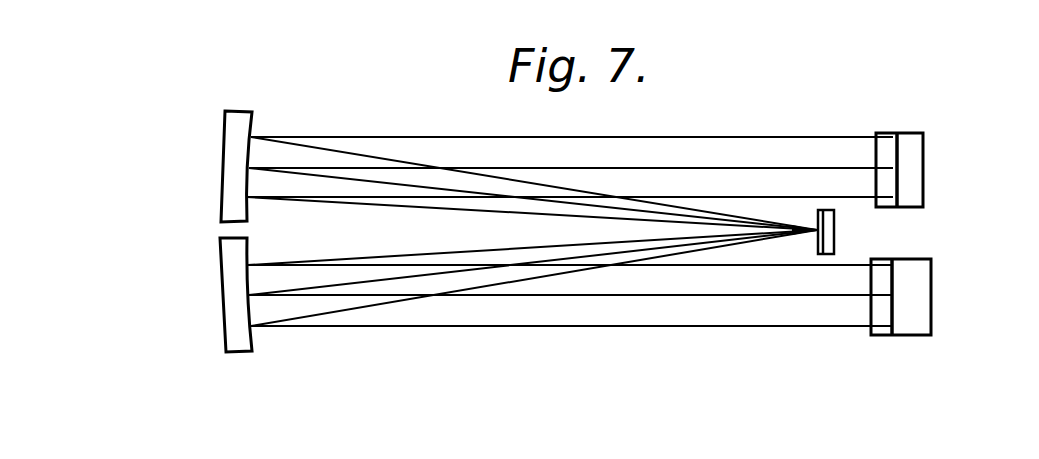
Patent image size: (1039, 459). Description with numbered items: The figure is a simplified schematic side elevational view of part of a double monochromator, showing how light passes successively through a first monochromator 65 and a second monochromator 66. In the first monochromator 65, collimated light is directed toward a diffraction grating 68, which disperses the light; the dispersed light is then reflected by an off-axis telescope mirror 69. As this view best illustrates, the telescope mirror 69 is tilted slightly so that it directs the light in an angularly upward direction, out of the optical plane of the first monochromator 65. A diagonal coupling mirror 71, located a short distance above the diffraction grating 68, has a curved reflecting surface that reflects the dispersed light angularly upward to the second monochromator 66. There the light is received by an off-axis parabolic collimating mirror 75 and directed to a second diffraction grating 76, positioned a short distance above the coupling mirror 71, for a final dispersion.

The first monochromator 65 is at (205, 261).
The second monochromator 66 is at (212, 172).
The diffraction grating 68 is at (925, 312).
The off-axis telescope mirror 69 is at (228, 330).
The diagonal coupling mirror 71 is at (831, 228).
The off-axis parabolic collimating mirror 75 is at (228, 128).
The second diffraction grating 76 is at (917, 143).